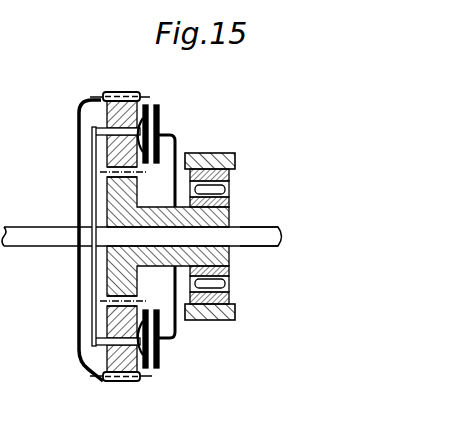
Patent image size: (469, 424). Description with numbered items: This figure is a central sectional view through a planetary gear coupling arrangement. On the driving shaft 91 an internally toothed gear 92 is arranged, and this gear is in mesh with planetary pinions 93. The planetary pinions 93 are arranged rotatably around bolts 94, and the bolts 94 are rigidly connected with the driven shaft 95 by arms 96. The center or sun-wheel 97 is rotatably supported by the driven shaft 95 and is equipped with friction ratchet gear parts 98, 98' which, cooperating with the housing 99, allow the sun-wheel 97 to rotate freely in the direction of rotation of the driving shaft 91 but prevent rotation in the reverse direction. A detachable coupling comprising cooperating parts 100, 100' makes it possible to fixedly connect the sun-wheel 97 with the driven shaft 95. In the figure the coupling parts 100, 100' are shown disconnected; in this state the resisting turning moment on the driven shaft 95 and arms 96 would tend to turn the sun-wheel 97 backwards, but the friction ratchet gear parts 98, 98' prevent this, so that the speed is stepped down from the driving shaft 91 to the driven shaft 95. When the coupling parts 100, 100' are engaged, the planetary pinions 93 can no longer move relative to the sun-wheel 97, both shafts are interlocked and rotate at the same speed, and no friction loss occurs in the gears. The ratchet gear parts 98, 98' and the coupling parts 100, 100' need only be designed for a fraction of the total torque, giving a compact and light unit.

The driving shaft 91 is at (30, 241).
The internally toothed gear 92 is at (119, 96).
The planetary pinions 93 is at (105, 364).
The bolts 94 is at (100, 133).
The driven shaft 95 is at (252, 238).
The arms 96 is at (92, 183).
The sun-wheel 97 is at (107, 209).
The friction ratchet gear part 98 is at (232, 236).
The friction ratchet gear part 98' is at (234, 231).
The housing 99 is at (212, 157).
The coupling part 100 is at (178, 218).
The coupling part 100' is at (190, 233).